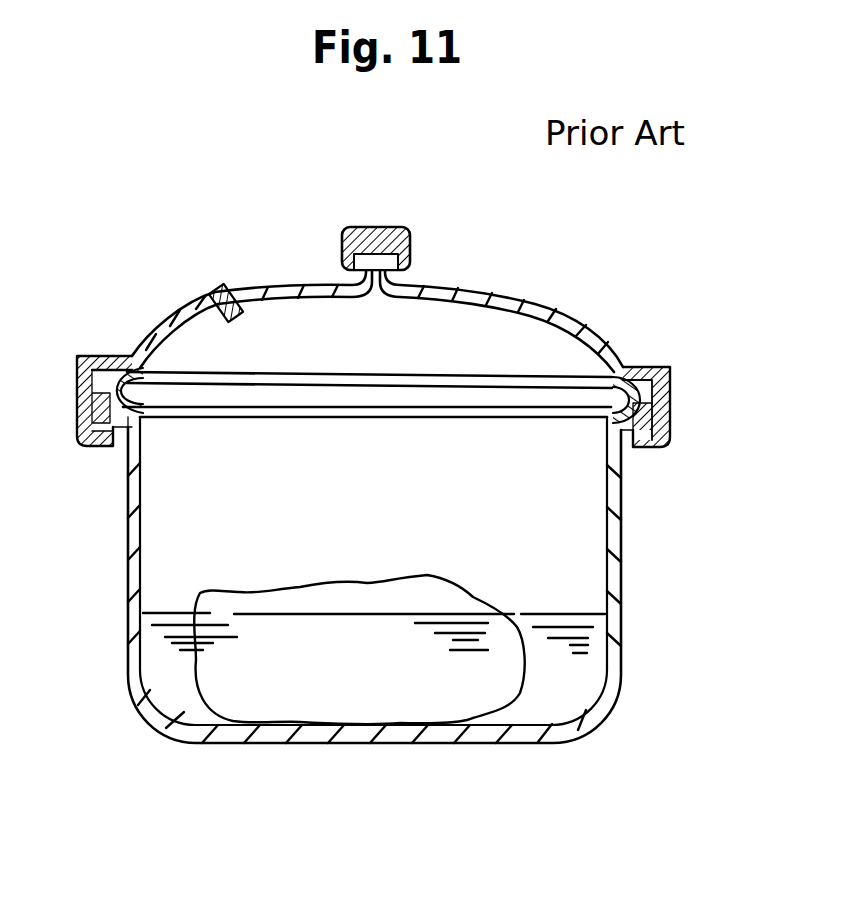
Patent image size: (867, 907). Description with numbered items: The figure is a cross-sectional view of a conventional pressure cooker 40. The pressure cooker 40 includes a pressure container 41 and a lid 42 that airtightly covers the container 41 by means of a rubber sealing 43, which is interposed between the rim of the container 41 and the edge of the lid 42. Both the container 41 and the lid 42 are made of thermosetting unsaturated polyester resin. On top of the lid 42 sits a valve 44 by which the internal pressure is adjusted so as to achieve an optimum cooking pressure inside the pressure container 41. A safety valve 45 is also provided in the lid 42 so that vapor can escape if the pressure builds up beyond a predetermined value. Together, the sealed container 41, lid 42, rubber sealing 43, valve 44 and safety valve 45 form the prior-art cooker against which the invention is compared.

The pressure cooker 40 is at (630, 645).
The pressure container 41 is at (622, 590).
The lid 42 is at (158, 325).
The rubber sealing 43 is at (452, 398).
The valve 44 is at (382, 227).
The safety valve 45 is at (226, 290).